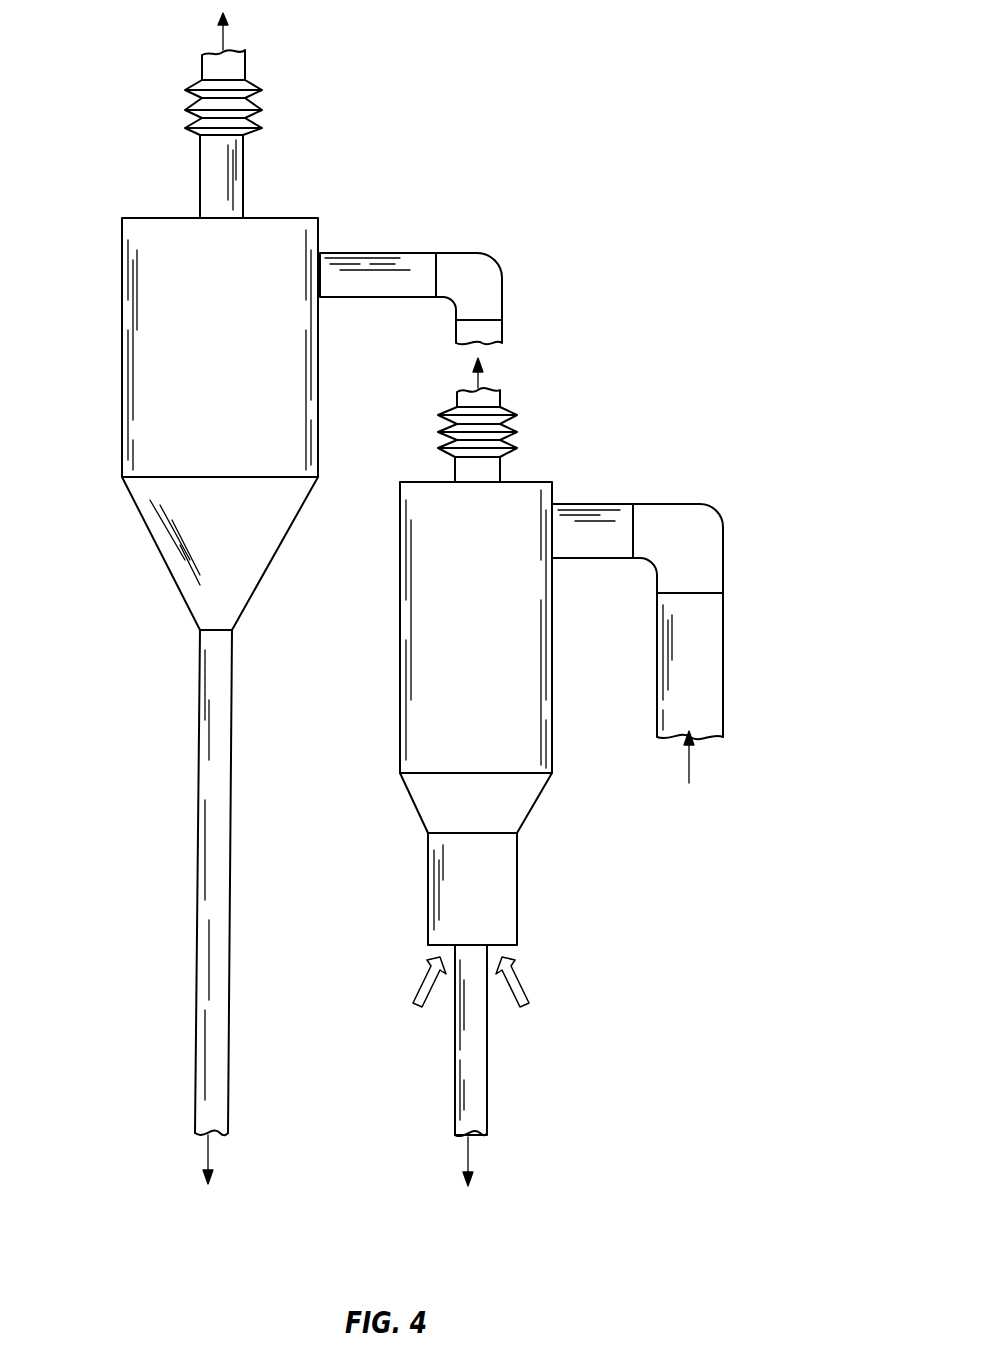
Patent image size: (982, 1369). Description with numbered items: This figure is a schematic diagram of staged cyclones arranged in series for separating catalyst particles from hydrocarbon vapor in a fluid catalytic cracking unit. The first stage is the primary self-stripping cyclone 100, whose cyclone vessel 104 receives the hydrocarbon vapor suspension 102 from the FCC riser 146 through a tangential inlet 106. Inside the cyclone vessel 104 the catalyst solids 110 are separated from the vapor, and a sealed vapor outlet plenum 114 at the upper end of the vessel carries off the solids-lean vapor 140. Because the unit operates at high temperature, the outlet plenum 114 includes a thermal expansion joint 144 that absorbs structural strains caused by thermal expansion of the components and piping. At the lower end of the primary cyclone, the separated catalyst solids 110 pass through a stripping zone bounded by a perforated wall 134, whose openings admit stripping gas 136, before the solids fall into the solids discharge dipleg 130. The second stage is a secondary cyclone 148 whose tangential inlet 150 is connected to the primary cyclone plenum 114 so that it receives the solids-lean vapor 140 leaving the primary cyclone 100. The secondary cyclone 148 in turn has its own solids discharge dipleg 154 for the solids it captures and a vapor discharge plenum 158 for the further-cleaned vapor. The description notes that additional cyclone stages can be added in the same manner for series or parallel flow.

The self-stripping cyclone 100 is at (552, 756).
The hydrocarbon vapor suspension 102 is at (689, 757).
The cyclone vessel 104 is at (400, 630).
The tangential inlet 106 is at (572, 558).
The catalyst solids 110 is at (470, 1150).
The sealed vapor outlet plenum 114 is at (500, 470).
The solids discharge dipleg 130 is at (453, 1092).
The perforated wall 134 is at (508, 958).
The stripping gas 136 is at (520, 1005).
The solids-lean vapor 140 is at (482, 383).
The thermal expansion joint 144 is at (512, 432).
The FCC riser 146 is at (723, 625).
The secondary cyclone 148 is at (138, 445).
The tangential inlet 150 is at (393, 253).
The solids discharge dipleg 154 is at (195, 995).
The vapor discharge plenum 158 is at (200, 185).